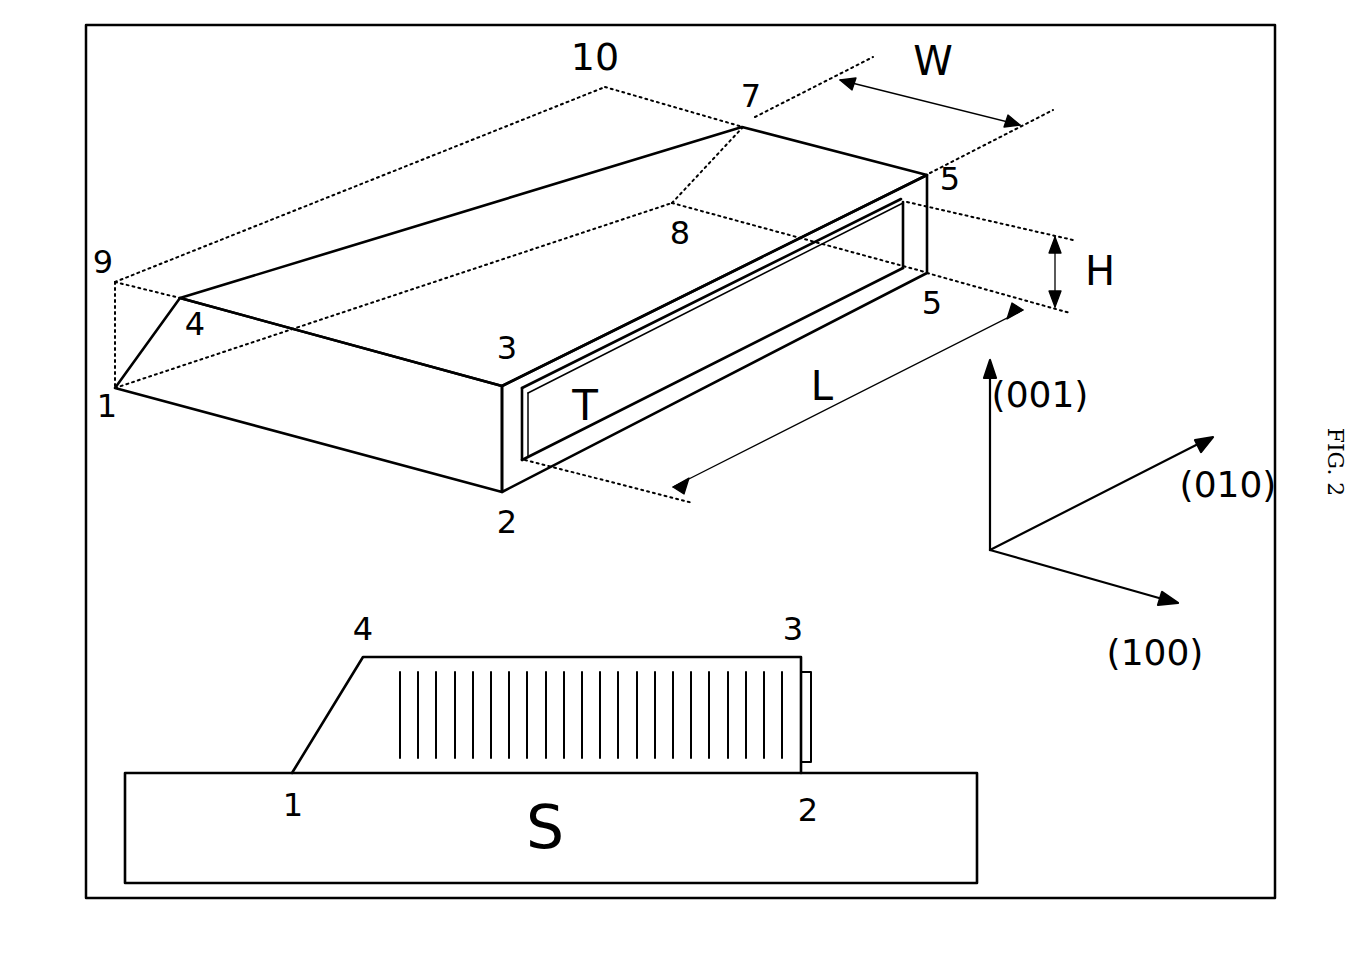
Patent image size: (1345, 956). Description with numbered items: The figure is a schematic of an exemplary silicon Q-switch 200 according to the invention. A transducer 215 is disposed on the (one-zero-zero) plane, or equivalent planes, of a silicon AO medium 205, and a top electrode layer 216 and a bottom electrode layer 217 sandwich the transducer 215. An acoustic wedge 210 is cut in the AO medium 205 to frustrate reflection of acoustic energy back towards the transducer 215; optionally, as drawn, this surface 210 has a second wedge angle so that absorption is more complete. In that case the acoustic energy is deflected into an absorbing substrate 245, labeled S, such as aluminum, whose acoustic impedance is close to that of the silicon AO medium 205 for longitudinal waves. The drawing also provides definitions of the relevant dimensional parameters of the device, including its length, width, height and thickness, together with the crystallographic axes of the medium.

The Q-switch 200 is at (568, 430).
The silicon AO medium 205 is at (323, 428).
The acoustic wedge 210 is at (362, 265).
The transducer 215 is at (923, 223).
The top electrode layer 216 is at (545, 437).
The bottom electrode layer 217 is at (520, 417).
The absorbing substrate 245 is at (977, 823).